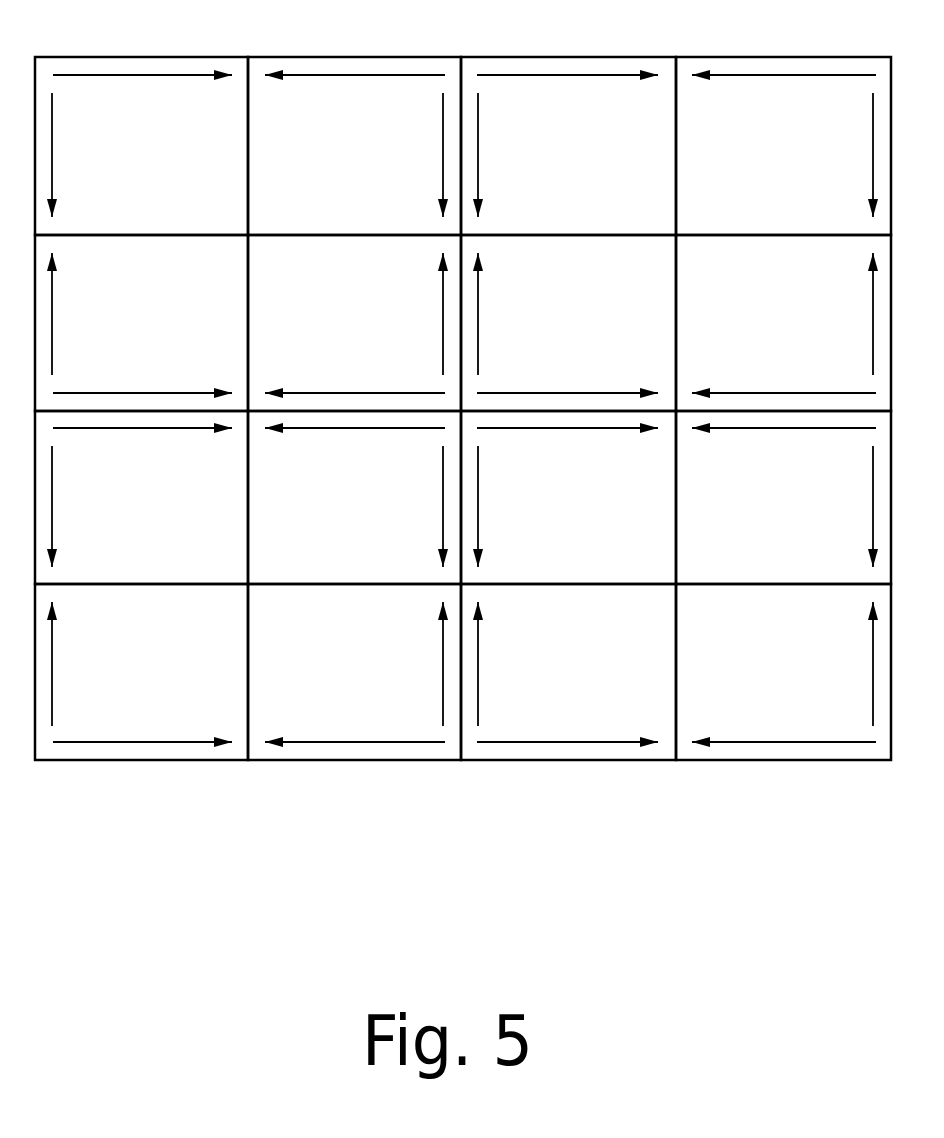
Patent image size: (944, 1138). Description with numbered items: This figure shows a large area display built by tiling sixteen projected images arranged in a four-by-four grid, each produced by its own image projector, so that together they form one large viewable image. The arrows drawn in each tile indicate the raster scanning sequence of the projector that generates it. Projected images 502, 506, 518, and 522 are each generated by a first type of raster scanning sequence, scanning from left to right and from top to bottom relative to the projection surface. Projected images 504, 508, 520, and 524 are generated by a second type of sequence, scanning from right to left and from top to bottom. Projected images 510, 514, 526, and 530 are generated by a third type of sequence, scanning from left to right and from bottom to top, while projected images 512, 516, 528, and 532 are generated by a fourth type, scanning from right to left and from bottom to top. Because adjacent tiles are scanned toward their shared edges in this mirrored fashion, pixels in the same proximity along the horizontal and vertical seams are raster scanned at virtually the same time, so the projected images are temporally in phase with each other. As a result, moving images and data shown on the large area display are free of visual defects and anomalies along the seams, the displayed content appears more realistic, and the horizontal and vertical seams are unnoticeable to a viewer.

The projected image 502 is at (117, 153).
The projected image 504 is at (327, 149).
The projected image 506 is at (543, 149).
The projected image 508 is at (753, 144).
The projected image 510 is at (115, 308).
The projected image 512 is at (326, 314).
The projected image 514 is at (546, 313).
The projected image 516 is at (750, 307).
The projected image 518 is at (108, 508).
The projected image 520 is at (328, 506).
The projected image 522 is at (543, 511).
The projected image 524 is at (755, 513).
The projected image 526 is at (108, 674).
The projected image 528 is at (325, 674).
The projected image 530 is at (546, 674).
The projected image 532 is at (755, 676).